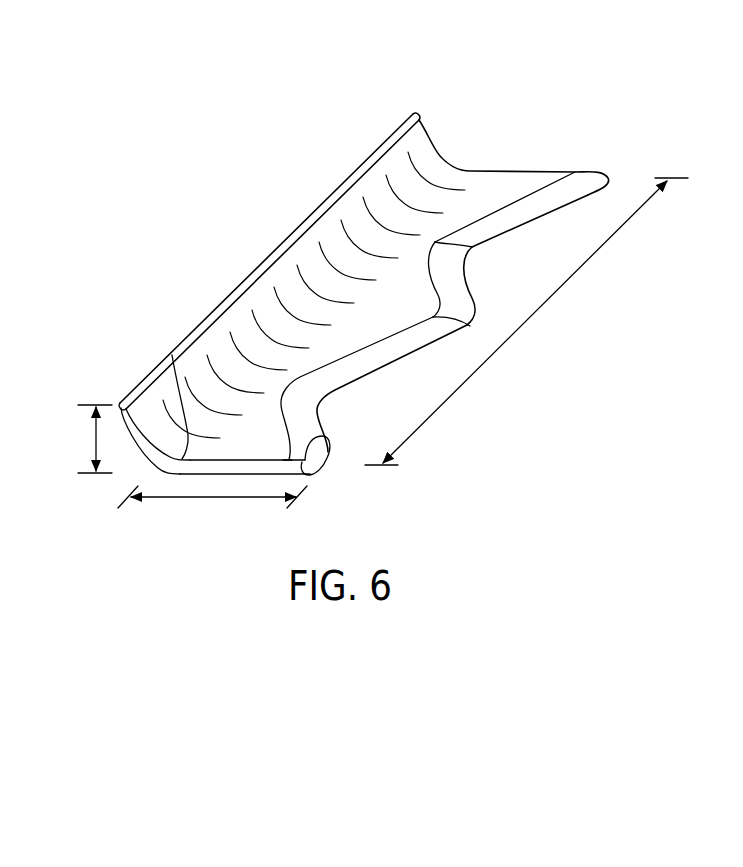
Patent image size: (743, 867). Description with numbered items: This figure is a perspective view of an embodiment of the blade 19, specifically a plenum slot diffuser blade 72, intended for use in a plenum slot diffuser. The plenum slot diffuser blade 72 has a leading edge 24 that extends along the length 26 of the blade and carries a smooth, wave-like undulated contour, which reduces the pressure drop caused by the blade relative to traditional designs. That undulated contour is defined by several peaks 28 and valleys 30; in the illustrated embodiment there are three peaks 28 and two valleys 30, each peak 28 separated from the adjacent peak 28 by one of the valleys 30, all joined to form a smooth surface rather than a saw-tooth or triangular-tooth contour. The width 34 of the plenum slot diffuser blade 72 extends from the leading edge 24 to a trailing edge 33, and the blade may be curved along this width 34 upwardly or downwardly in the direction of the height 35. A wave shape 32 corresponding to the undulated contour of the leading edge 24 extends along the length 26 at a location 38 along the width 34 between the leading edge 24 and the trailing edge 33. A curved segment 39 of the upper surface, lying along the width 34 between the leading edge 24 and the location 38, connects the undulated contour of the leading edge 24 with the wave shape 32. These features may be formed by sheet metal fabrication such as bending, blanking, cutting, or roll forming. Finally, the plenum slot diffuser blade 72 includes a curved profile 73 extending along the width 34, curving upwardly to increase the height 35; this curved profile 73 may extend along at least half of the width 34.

The blade 19 is at (397, 263).
The plenum slot diffuser blade 72 is at (568, 127).
The leading edge 24 is at (305, 458).
The length 26 is at (527, 319).
The peaks 28 is at (618, 183).
The valleys 30 is at (483, 252).
The wave shape 32 is at (393, 335).
The trailing edge 33 is at (120, 403).
The width 34 is at (210, 498).
The height 35 is at (93, 437).
The location 38 is at (287, 459).
The curved segment 39 is at (328, 437).
The curved profile 73 is at (172, 355).